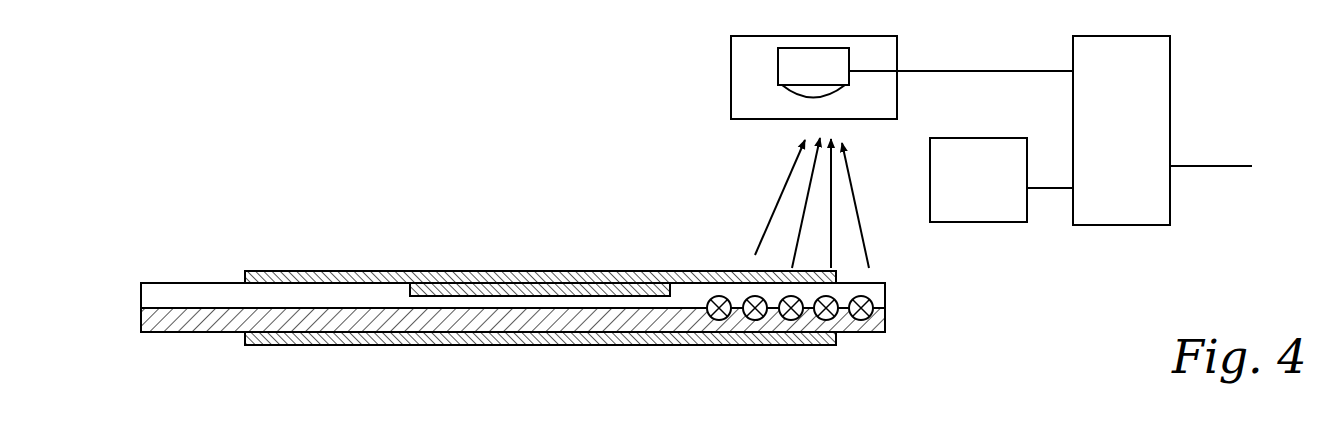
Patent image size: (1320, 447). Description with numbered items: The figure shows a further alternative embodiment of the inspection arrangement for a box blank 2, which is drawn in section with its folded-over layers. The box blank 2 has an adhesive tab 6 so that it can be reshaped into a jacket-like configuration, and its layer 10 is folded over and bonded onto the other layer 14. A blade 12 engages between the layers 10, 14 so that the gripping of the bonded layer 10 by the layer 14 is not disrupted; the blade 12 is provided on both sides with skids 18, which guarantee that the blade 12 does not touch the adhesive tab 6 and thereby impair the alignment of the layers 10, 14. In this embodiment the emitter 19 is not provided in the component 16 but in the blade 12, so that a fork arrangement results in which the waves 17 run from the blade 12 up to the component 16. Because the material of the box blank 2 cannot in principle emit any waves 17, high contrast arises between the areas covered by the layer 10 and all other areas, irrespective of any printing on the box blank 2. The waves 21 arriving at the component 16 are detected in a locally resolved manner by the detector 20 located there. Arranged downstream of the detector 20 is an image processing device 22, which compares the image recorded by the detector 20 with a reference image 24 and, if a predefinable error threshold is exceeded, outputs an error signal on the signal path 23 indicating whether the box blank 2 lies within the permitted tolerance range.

The box blank 2 is at (500, 268).
The adhesive tab 6 is at (427, 290).
The layer 10 is at (565, 280).
The blade 12 is at (467, 318).
The layer 14 is at (603, 340).
The component 16 is at (748, 94).
The waves 17 is at (780, 195).
The skids 18 is at (391, 296).
The emitter 19 is at (873, 307).
The detector 20 is at (820, 72).
The reflected waves 21 is at (873, 207).
The image processing device 22 is at (1121, 130).
The signal path 23 is at (1230, 166).
The reference image 24 is at (1001, 180).